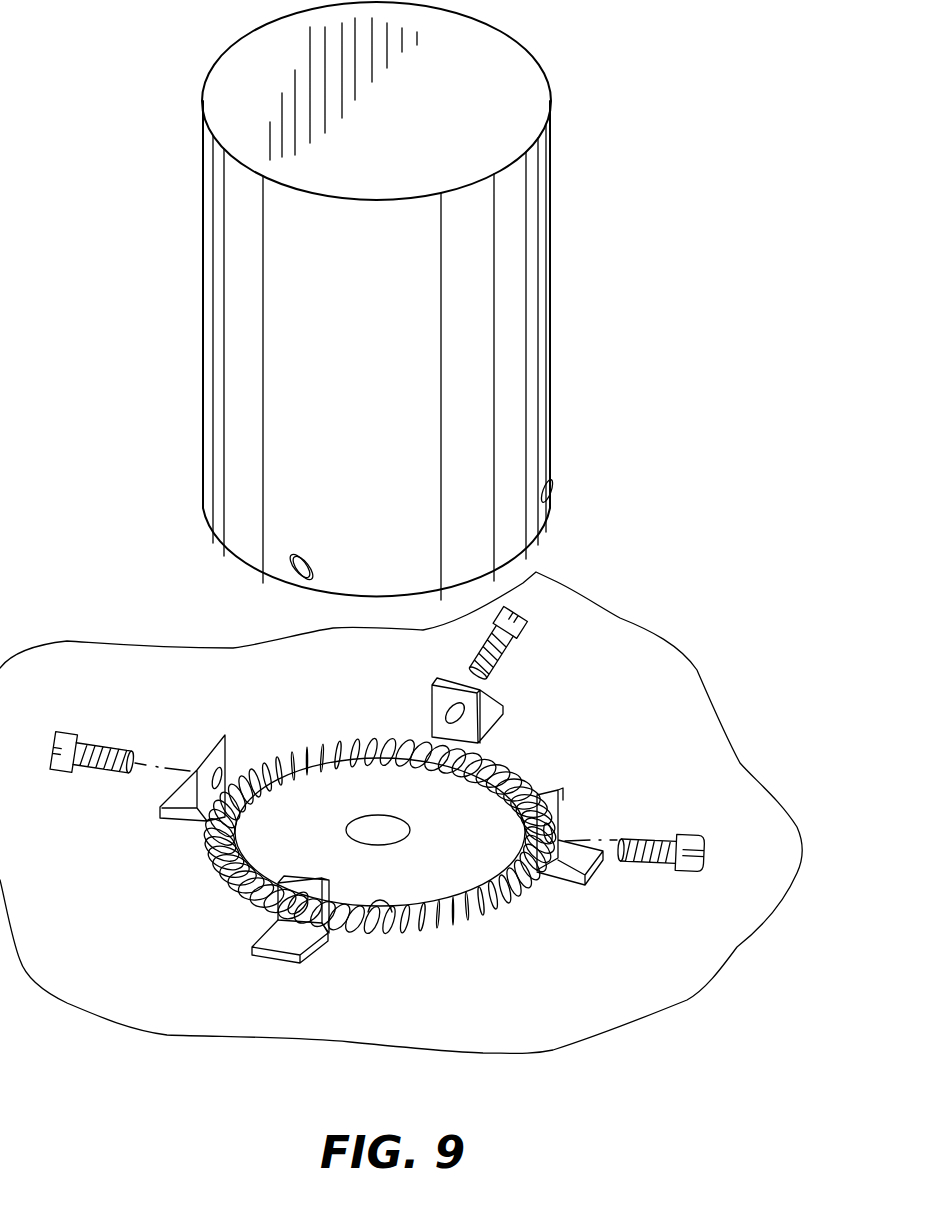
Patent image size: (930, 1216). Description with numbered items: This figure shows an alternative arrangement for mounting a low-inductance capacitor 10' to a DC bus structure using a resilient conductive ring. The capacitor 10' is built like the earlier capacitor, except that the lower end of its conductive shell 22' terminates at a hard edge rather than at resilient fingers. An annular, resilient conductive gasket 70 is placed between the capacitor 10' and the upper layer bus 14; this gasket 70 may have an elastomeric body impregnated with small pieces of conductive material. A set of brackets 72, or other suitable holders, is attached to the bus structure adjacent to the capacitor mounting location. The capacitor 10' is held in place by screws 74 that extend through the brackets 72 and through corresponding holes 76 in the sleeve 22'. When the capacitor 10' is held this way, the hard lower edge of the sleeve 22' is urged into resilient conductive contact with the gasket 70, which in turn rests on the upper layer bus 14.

The capacitor 10' is at (627, 151).
The conductive shell 22' is at (320, 301).
The holes 76 is at (297, 573).
The screws 74 is at (80, 770).
The brackets 72 is at (215, 742).
The resilient conductive gasket 70 is at (400, 933).
The upper layer bus 14 is at (585, 980).